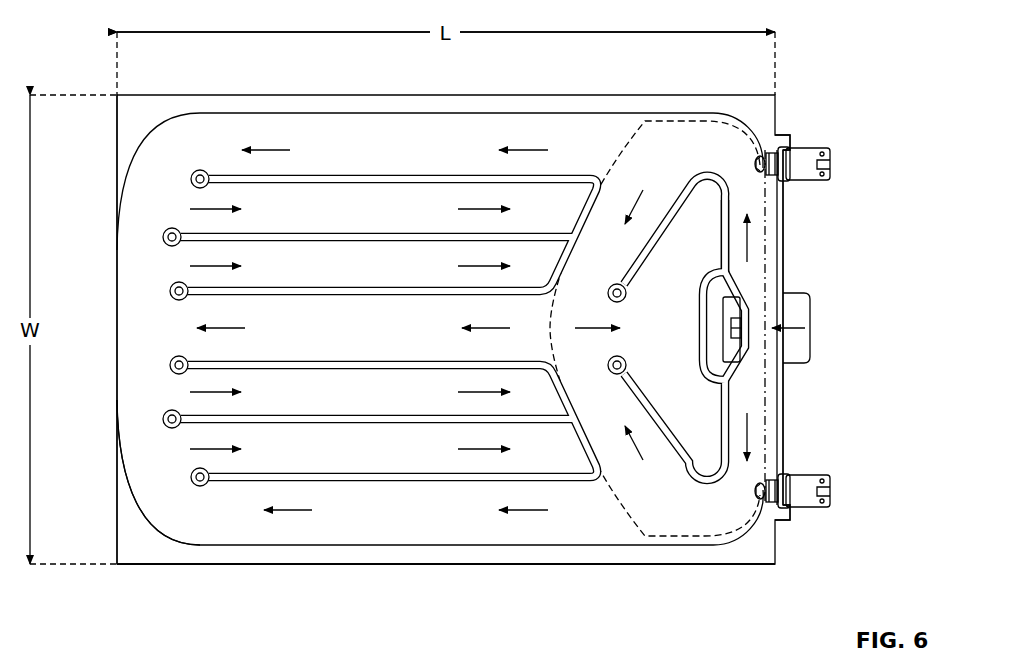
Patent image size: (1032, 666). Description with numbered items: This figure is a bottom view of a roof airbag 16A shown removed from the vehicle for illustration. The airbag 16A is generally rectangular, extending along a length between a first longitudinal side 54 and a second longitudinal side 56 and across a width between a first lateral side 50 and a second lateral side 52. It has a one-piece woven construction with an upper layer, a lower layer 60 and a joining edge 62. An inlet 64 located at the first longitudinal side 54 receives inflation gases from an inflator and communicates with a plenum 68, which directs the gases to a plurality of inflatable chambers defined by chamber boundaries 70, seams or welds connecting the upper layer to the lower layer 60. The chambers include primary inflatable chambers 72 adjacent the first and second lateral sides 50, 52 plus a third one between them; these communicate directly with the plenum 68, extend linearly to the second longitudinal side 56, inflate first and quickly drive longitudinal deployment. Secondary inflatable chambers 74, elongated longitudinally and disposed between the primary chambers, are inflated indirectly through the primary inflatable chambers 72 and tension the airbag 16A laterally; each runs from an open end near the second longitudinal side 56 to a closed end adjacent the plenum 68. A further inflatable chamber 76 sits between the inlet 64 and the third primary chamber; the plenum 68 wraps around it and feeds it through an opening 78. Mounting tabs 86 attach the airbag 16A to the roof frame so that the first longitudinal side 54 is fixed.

The roof airbag 16A is at (516, 574).
The first lateral side 50 is at (293, 105).
The second lateral side 52 is at (380, 564).
The first longitudinal side 54 is at (783, 232).
The second longitudinal side 56 is at (117, 385).
The lower layer 60 is at (200, 135).
The joining edge 62 is at (140, 550).
The inlet 64 is at (795, 293).
The plenum 68 is at (697, 538).
The chamber boundaries 70 is at (313, 174).
The primary inflatable chambers 72 is at (398, 158).
The secondary inflatable chambers 74 is at (353, 221).
The further inflatable chamber 76 is at (681, 243).
The opening 78 is at (632, 304).
The mounting tabs 86 is at (800, 156).